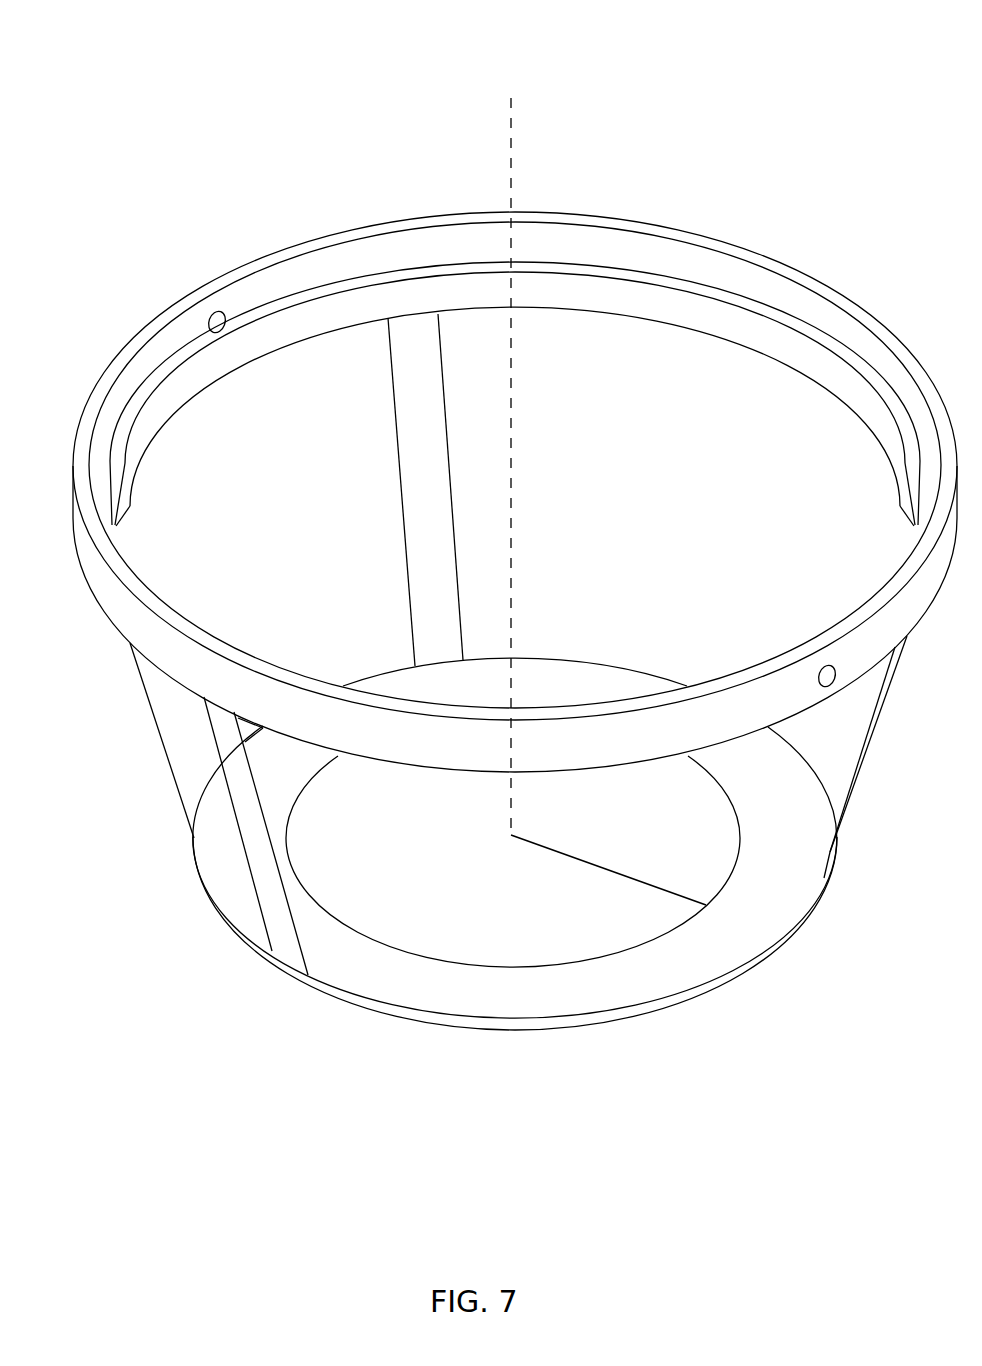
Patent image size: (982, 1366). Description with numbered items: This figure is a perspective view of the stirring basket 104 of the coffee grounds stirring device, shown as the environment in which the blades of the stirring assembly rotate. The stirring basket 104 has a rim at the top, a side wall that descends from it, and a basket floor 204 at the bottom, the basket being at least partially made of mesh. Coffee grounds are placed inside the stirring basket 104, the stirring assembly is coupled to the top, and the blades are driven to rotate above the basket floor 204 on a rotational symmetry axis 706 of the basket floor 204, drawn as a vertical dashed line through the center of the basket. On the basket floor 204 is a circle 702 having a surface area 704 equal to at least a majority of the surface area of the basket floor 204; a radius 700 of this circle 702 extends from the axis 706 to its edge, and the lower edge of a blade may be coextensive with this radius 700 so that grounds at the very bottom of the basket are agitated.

The stirring basket 104 is at (805, 136).
The rotational symmetry axis 706 is at (510, 192).
The circle 702 is at (360, 934).
The radius 700 is at (588, 868).
The basket floor 204 is at (598, 1032).
The surface area 704 is at (402, 851).